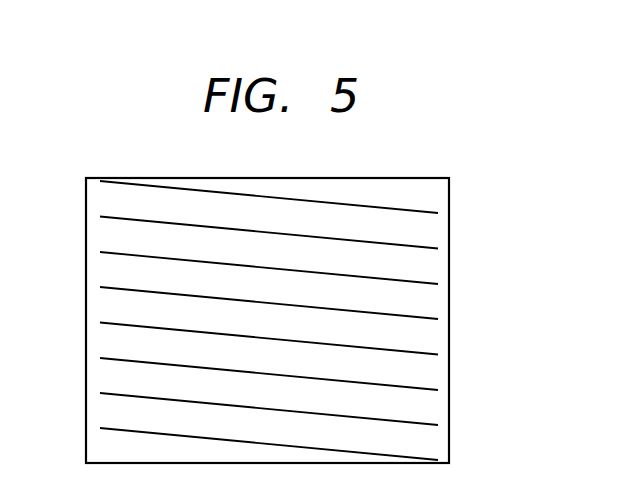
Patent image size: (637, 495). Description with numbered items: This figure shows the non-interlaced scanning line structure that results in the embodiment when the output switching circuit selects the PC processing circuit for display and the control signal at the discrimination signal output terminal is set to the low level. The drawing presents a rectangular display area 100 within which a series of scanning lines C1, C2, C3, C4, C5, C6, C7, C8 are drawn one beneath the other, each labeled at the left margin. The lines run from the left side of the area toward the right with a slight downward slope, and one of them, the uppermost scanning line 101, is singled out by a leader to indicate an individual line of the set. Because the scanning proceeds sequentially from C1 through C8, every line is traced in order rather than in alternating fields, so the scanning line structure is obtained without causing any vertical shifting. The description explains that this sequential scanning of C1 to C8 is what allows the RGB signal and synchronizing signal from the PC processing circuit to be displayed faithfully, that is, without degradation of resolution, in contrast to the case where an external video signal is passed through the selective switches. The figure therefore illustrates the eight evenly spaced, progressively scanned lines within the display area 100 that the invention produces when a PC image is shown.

The recording sheet 100 is at (373, 178).
The recorded line 101 is at (278, 212).
The first scanning line C1 is at (242, 190).
The second scanning line C2 is at (242, 225).
The third scanning line C3 is at (242, 260).
The fourth scanning line C4 is at (242, 295).
The fifth scanning line C5 is at (242, 331).
The sixth scanning line C6 is at (242, 366).
The seventh scanning line C7 is at (242, 401).
The eighth scanning line C8 is at (242, 436).